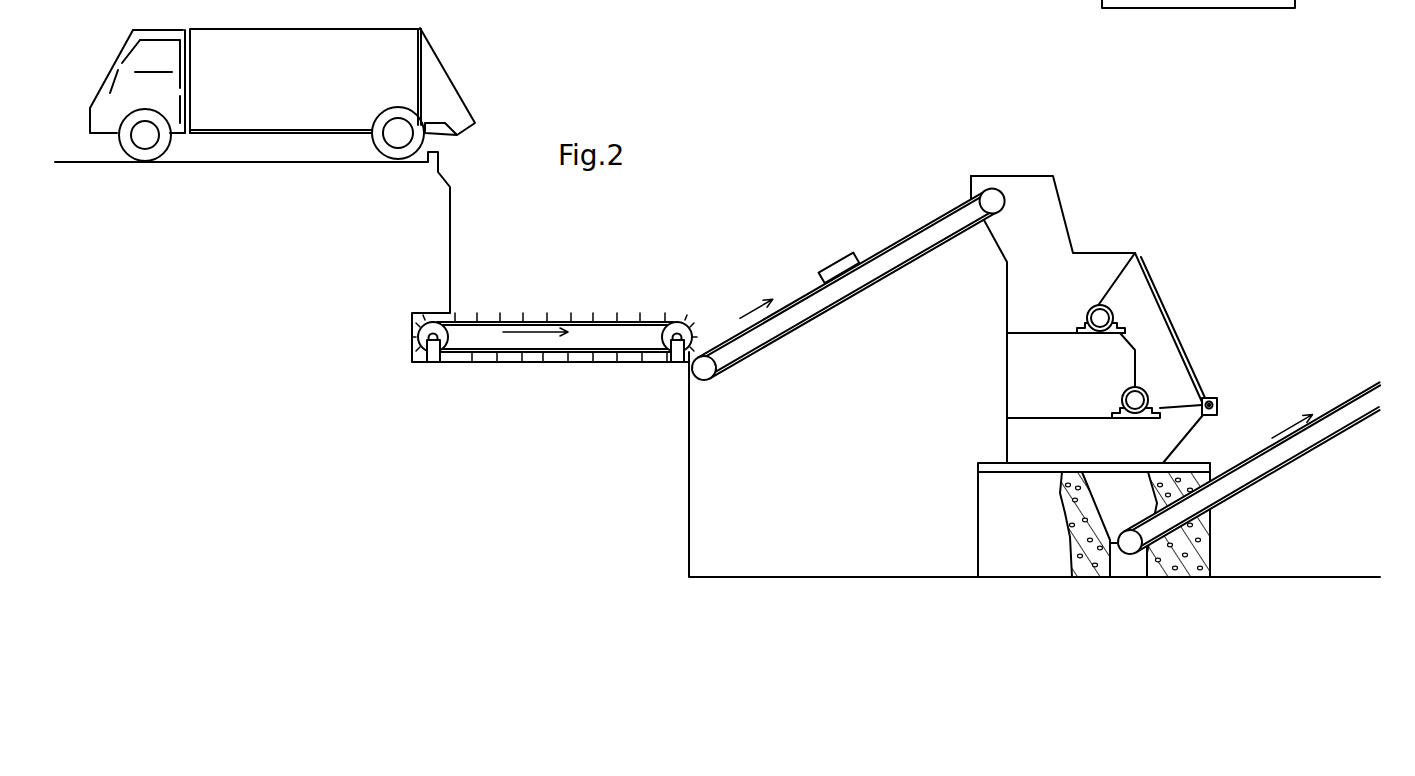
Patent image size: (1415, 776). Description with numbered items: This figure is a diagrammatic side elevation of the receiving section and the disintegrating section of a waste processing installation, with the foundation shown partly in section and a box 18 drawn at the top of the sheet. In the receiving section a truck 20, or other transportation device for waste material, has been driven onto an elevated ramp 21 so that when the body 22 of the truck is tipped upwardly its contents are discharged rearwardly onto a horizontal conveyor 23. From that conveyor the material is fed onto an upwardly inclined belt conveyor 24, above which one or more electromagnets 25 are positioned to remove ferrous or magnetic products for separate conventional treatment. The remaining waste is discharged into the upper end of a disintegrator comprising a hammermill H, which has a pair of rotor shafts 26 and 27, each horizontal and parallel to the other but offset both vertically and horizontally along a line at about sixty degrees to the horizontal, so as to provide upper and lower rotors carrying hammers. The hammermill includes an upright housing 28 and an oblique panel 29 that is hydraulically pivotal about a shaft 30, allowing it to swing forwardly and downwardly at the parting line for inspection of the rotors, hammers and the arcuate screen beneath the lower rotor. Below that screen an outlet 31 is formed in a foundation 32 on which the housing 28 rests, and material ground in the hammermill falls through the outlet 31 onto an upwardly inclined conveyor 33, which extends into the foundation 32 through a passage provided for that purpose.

The control box 18 is at (1181, 10).
The truck 20 is at (282, 82).
The elevated ramp 21 is at (283, 162).
The body 22 is at (311, 26).
The horizontal conveyor 23 is at (533, 320).
The upwardly inclined belt conveyor 24 is at (914, 236).
The electromagnet 25 is at (853, 256).
The rotor shaft 26 is at (1098, 317).
The rotor shaft 27 is at (1135, 400).
The upright housing 28 is at (1006, 370).
The oblique panel 29 is at (1153, 348).
The shaft 30 is at (1216, 402).
The outlet 31 is at (1121, 507).
The foundation 32 is at (978, 532).
The upwardly inclined conveyor 33 is at (1343, 403).
The hammermill H is at (1077, 253).